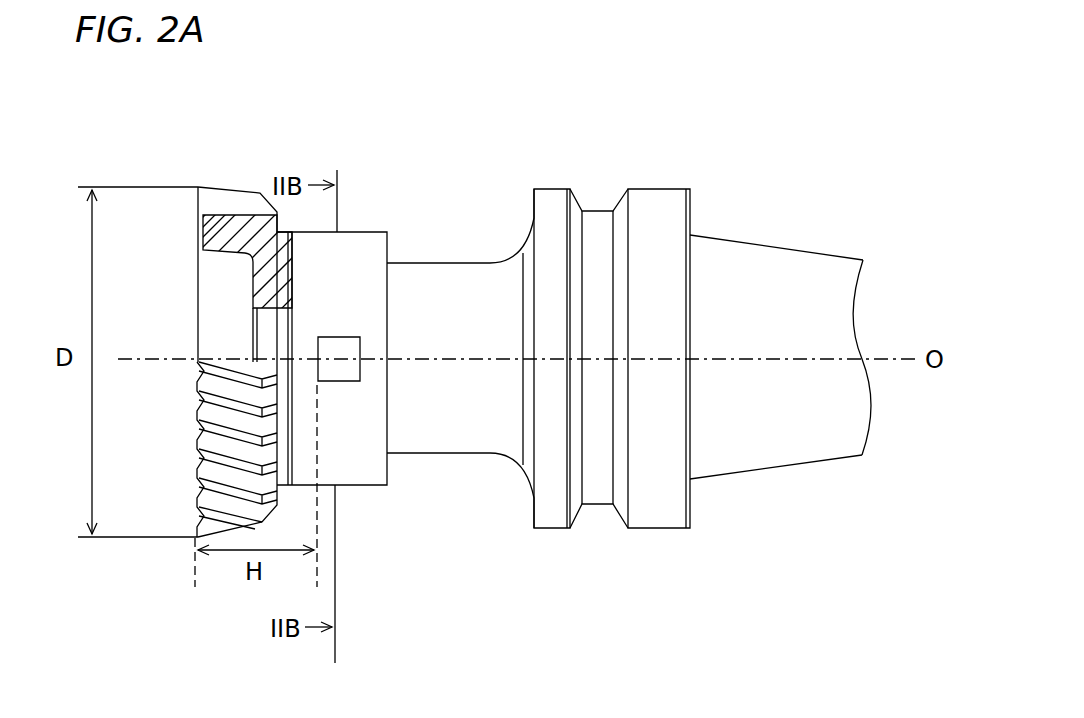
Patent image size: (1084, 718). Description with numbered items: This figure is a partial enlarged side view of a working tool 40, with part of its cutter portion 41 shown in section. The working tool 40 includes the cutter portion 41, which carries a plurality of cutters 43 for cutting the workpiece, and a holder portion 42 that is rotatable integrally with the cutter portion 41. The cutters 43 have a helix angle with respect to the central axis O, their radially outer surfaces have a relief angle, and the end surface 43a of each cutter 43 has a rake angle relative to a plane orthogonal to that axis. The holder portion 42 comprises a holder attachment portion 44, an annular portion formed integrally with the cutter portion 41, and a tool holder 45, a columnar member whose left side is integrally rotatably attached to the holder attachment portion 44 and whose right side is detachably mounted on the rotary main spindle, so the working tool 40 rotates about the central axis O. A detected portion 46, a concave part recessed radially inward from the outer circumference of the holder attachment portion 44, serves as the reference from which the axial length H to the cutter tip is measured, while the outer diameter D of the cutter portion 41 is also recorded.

The working tool 40 is at (757, 592).
The cutter portion 41 is at (290, 157).
The holder portion 42 is at (682, 163).
The cutters 43 is at (215, 438).
The end surface 43a is at (203, 237).
The holder attachment portion 44 is at (372, 240).
The tool holder 45 is at (447, 280).
The detected portion 46 is at (357, 365).